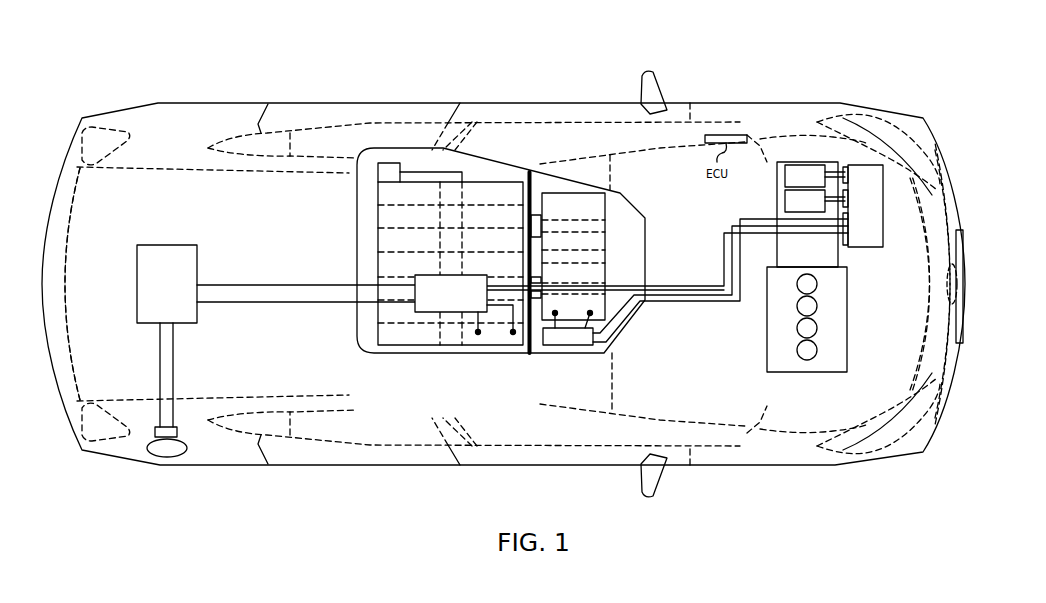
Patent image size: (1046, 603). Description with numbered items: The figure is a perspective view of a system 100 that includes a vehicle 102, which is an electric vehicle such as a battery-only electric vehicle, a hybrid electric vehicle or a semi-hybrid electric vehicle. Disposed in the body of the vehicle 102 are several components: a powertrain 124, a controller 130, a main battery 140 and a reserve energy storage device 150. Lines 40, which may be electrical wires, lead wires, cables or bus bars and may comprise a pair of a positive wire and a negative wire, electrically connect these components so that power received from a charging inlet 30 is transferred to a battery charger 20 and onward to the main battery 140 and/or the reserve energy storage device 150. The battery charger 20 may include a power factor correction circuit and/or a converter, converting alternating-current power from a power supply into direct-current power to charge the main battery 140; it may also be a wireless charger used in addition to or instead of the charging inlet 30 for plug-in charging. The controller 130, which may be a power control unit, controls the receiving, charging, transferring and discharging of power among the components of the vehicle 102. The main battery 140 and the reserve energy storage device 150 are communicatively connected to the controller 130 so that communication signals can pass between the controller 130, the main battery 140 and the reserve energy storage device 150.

The system 100 is at (87, 70).
The vehicle 102 is at (181, 103).
The battery charger 20 is at (168, 245).
The charging inlet 30 is at (187, 447).
The lines 40 is at (234, 285).
The powertrain 124 is at (847, 318).
The controller 130 is at (868, 247).
The main battery 140 is at (485, 160).
The reserve energy storage device 150 is at (633, 203).